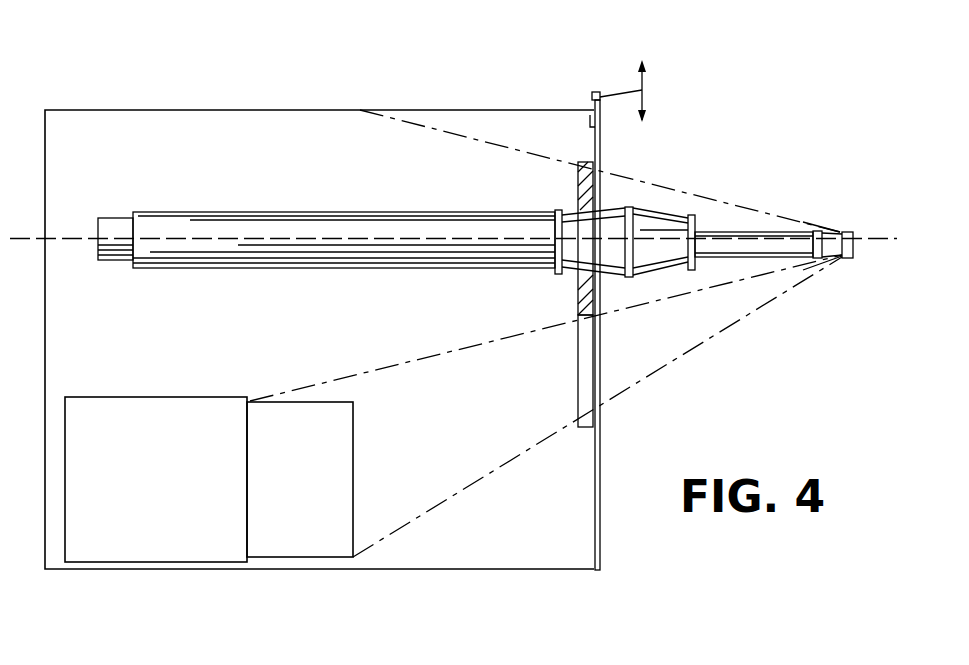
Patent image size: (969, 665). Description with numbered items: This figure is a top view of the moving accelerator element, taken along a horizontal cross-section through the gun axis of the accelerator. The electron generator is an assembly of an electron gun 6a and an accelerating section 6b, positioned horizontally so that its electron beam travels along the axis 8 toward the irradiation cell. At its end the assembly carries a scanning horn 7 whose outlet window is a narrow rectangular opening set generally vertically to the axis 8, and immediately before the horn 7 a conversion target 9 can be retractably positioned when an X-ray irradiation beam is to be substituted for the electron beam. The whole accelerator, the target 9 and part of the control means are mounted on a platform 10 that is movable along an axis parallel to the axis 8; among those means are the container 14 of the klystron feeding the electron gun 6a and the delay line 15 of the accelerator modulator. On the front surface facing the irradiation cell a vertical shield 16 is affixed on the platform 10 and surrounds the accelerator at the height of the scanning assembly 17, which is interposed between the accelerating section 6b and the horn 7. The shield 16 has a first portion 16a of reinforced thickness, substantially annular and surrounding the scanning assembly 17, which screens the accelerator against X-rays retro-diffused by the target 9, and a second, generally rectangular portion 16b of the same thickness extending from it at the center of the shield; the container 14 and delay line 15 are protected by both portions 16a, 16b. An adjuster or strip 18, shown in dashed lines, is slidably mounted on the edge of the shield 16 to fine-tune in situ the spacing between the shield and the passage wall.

The platform 10 is at (470, 572).
The axis of the electron beam 8 is at (70, 237).
The electron gun 6a is at (113, 230).
The accelerating section 6b is at (347, 230).
The scanning assembly 17 is at (637, 284).
The scanning horn 7 is at (742, 238).
The conversion target 9 is at (847, 232).
The shield 16 is at (603, 472).
The first portion of the shield 16a is at (578, 300).
The second portion of the shield 16b is at (586, 345).
The adjuster strip 18 is at (586, 84).
The container of a klystron 14 is at (167, 393).
The delay line 15 is at (304, 398).